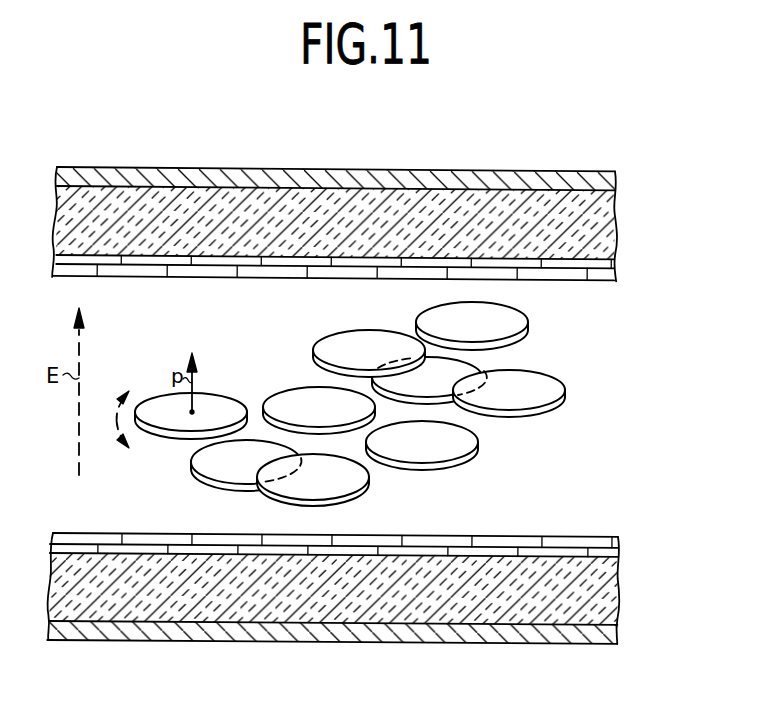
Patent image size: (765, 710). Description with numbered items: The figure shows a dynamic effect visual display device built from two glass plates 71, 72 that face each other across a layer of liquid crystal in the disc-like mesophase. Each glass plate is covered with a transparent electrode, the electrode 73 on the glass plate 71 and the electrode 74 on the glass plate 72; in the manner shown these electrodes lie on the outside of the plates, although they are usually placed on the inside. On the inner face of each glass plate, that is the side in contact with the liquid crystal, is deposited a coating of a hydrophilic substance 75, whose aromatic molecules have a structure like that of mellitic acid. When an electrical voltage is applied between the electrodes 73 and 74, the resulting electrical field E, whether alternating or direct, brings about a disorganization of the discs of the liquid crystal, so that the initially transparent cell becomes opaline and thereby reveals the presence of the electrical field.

The glass plate 71 is at (614, 228).
The glass plate 72 is at (617, 591).
The transparent electrode 73 is at (614, 179).
The transparent electrode 74 is at (617, 631).
The coating of a hydrophilic substance 75 is at (615, 270).